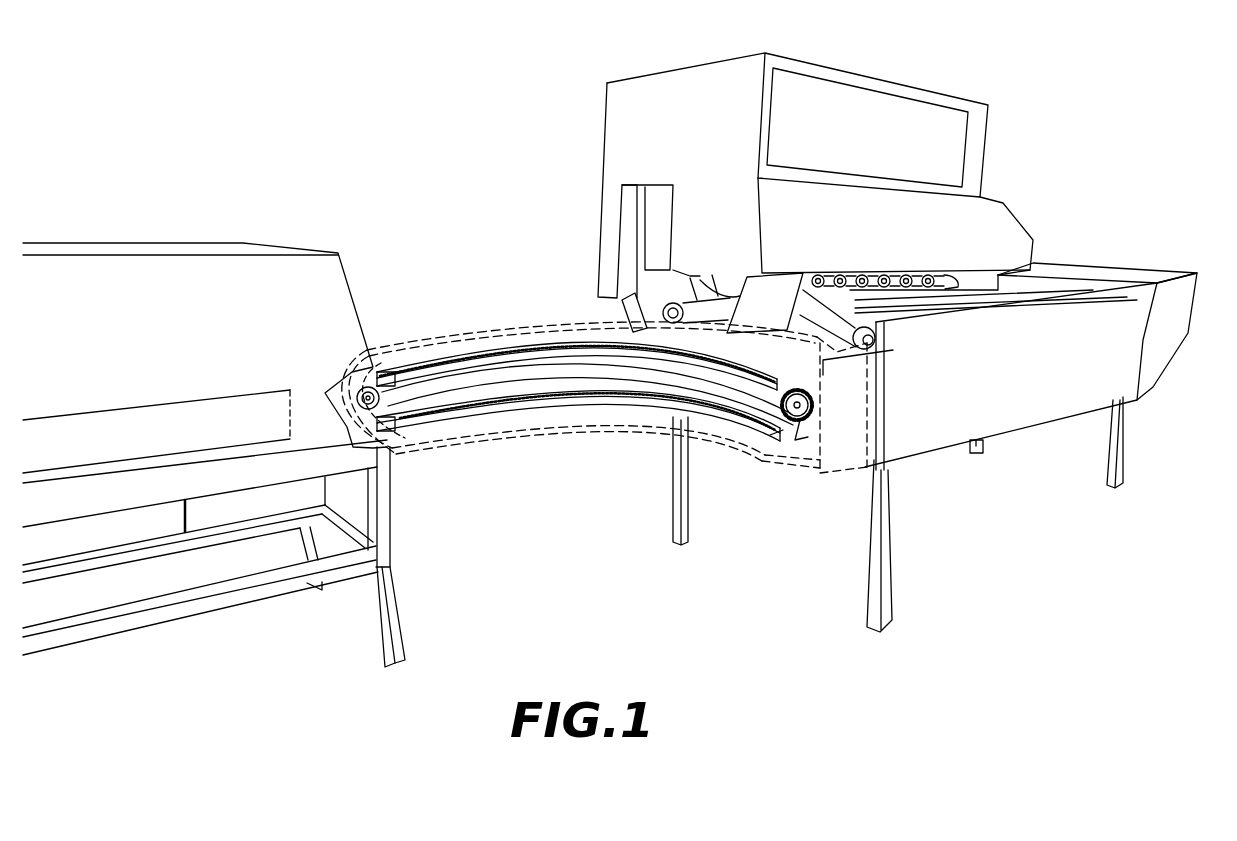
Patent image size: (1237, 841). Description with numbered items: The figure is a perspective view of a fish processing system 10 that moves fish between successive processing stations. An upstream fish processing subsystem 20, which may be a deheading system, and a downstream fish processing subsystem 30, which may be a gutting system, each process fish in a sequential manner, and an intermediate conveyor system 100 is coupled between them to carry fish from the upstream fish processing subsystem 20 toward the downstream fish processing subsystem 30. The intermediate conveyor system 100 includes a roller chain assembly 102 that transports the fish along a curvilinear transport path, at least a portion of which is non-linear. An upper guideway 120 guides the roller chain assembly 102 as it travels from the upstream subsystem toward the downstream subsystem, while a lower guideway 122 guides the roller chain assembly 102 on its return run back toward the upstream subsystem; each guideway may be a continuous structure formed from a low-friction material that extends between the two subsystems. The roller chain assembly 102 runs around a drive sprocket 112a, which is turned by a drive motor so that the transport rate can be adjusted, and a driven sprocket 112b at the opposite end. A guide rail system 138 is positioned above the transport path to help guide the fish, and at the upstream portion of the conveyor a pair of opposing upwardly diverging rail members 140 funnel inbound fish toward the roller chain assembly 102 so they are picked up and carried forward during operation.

The fish processing system 10 is at (931, 60).
The upstream fish processing subsystem 20 is at (1027, 214).
The downstream fish processing subsystem 30 is at (293, 243).
The intermediate conveyor system 100 is at (654, 452).
The roller chain assembly 102 is at (747, 427).
The drive sprocket 112a is at (376, 400).
The driven sprocket 112b is at (788, 413).
The upper guideway 120 is at (609, 368).
The lower guideway 122 is at (660, 408).
The guide rail system 138 is at (872, 383).
The upwardly diverging rail members 140 is at (865, 360).